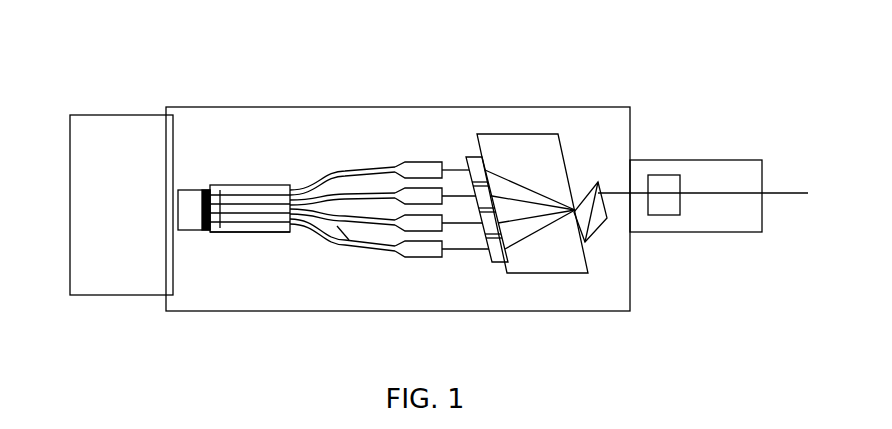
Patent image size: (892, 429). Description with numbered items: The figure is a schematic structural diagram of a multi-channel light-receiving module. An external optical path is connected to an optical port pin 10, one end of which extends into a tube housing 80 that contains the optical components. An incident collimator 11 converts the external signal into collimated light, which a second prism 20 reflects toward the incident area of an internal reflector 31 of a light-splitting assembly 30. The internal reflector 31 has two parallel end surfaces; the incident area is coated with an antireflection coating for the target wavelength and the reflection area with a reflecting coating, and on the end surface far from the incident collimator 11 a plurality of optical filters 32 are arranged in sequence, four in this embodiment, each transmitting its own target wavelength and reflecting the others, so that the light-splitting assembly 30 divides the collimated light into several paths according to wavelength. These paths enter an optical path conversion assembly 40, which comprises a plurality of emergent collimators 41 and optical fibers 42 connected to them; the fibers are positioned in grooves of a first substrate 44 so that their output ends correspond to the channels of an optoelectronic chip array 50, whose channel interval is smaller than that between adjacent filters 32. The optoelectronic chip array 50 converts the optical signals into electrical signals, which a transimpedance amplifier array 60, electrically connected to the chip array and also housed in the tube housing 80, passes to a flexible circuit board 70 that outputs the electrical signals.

The optical port pin 10 is at (725, 160).
The incident collimator 11 is at (663, 175).
The second prism 20 is at (612, 226).
The light-splitting assembly 30 is at (517, 128).
The internal reflector 31 is at (560, 275).
The optical filters 32 is at (471, 152).
The optical path conversion assembly 40 is at (302, 172).
The emergent collimators 41 is at (418, 258).
The optical fibers 42 is at (360, 165).
The first substrate 44 is at (264, 233).
The optoelectronic chip array 50 is at (207, 188).
The transimpedance amplifier array 60 is at (185, 197).
The flexible circuit board 70 is at (123, 130).
The tube housing 80 is at (418, 104).